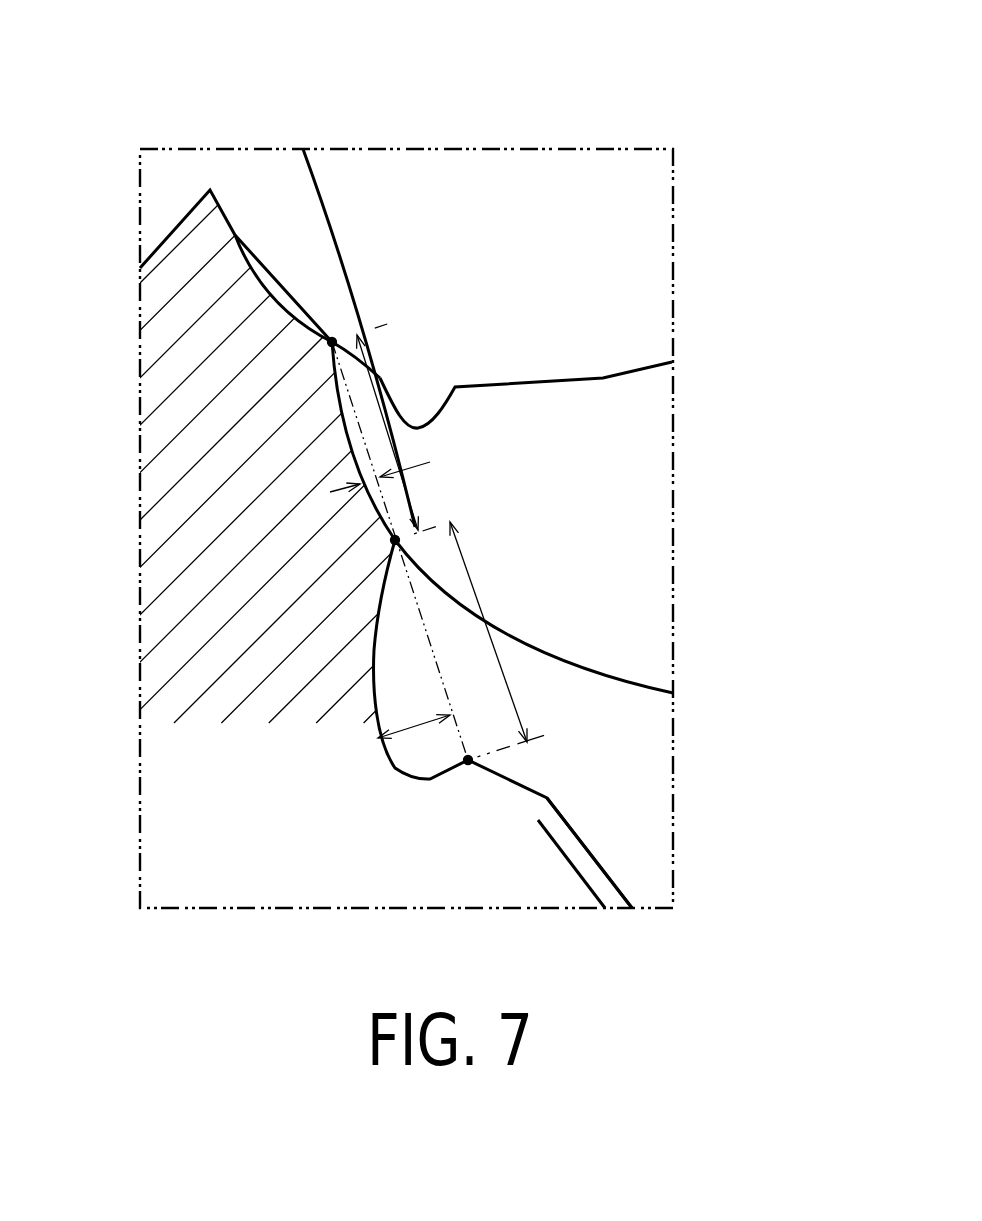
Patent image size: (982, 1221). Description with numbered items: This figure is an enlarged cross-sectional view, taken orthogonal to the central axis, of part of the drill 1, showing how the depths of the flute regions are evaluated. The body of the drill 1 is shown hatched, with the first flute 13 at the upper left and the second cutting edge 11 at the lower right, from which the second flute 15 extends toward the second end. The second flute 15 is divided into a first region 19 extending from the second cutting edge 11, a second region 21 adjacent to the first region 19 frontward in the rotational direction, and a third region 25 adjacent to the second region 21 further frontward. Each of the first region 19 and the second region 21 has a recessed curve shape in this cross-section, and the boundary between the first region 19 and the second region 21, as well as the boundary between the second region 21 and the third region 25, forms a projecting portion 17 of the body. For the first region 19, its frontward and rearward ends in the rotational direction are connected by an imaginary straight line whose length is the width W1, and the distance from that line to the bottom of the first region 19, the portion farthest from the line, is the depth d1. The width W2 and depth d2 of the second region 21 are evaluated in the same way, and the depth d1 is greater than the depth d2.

The drill 1 is at (592, 112).
The second cutting edge 11 is at (607, 870).
The first flute 13 is at (255, 192).
The second flute 15 is at (534, 441).
The projecting portion 17 is at (373, 352).
The first region 19 is at (605, 750).
The second region 21 is at (645, 493).
The third region 25 is at (290, 307).
The width of the first region W1 is at (481, 612).
The width of the second region W2 is at (380, 407).
The depth of the first region d1 is at (407, 725).
The depth of the second region d2 is at (330, 492).